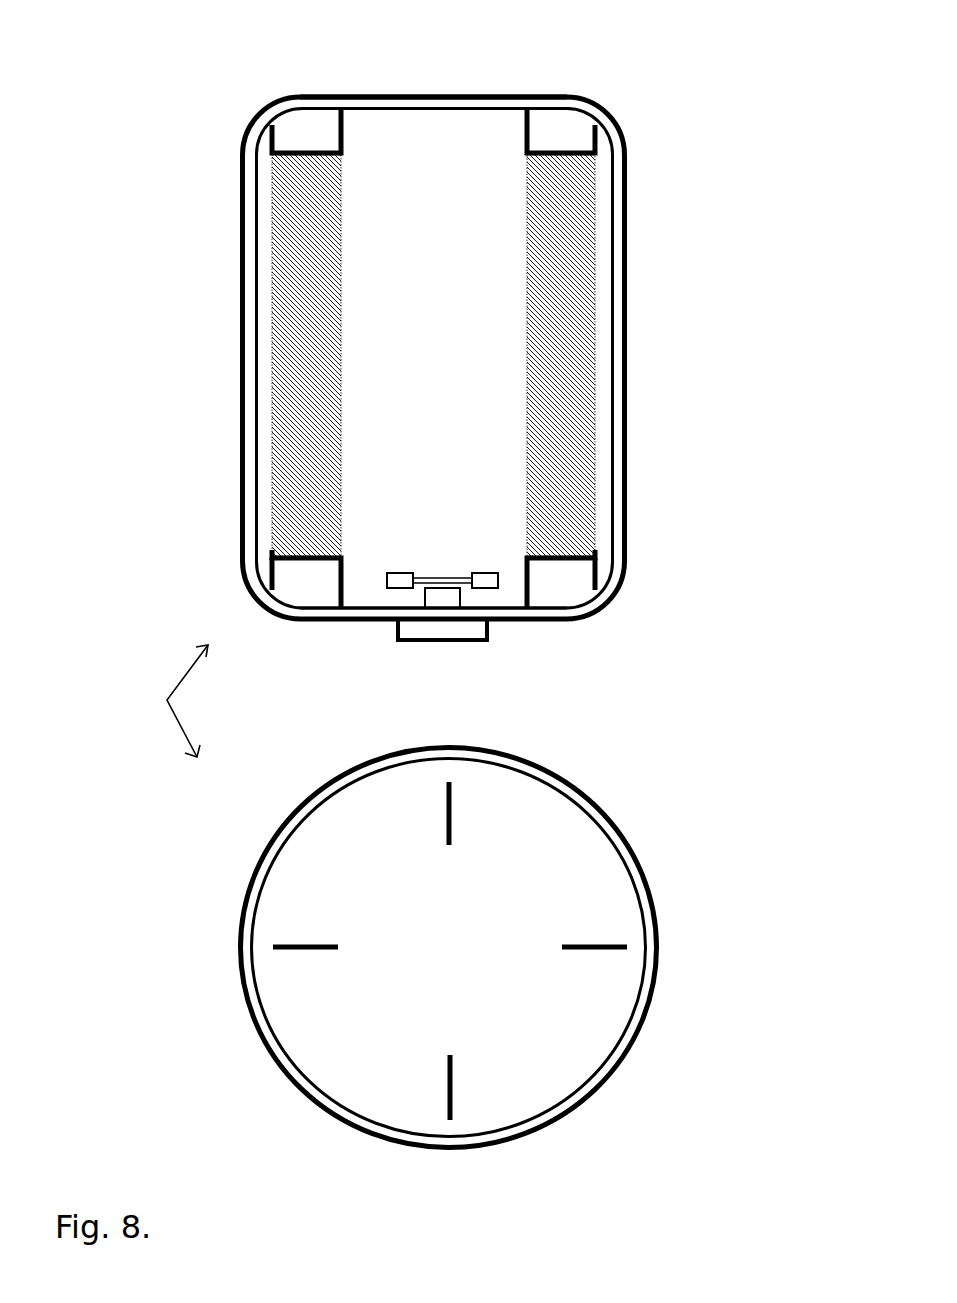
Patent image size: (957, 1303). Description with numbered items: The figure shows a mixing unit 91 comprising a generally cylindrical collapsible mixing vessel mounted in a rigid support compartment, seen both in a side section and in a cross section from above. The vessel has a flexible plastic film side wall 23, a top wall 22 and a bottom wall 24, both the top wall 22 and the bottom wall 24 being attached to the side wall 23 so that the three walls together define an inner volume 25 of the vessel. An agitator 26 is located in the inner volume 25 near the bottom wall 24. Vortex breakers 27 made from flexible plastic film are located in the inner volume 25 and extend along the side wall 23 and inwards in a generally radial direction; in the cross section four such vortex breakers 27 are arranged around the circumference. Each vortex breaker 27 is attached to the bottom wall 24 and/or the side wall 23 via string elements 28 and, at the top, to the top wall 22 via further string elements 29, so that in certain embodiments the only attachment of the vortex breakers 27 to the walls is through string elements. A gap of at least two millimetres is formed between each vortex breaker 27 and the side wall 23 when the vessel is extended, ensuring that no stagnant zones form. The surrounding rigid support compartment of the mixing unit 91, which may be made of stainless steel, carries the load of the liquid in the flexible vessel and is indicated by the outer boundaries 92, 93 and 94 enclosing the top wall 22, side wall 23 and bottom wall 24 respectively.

The top wall 22 is at (358, 107).
The flexible plastic film side wall 23 is at (255, 347).
The bottom wall 24 is at (500, 608).
The inner volume 25 is at (425, 392).
The agitator 26 is at (410, 585).
The vortex breaker 27 is at (305, 207).
The string elements 28 is at (272, 566).
The string elements 29 is at (440, 83).
The mixing unit 91 is at (160, 701).
The top wall outer surface 92 is at (437, 97).
The side wall outer surface 93 is at (242, 410).
The bottom wall 94 is at (387, 622).